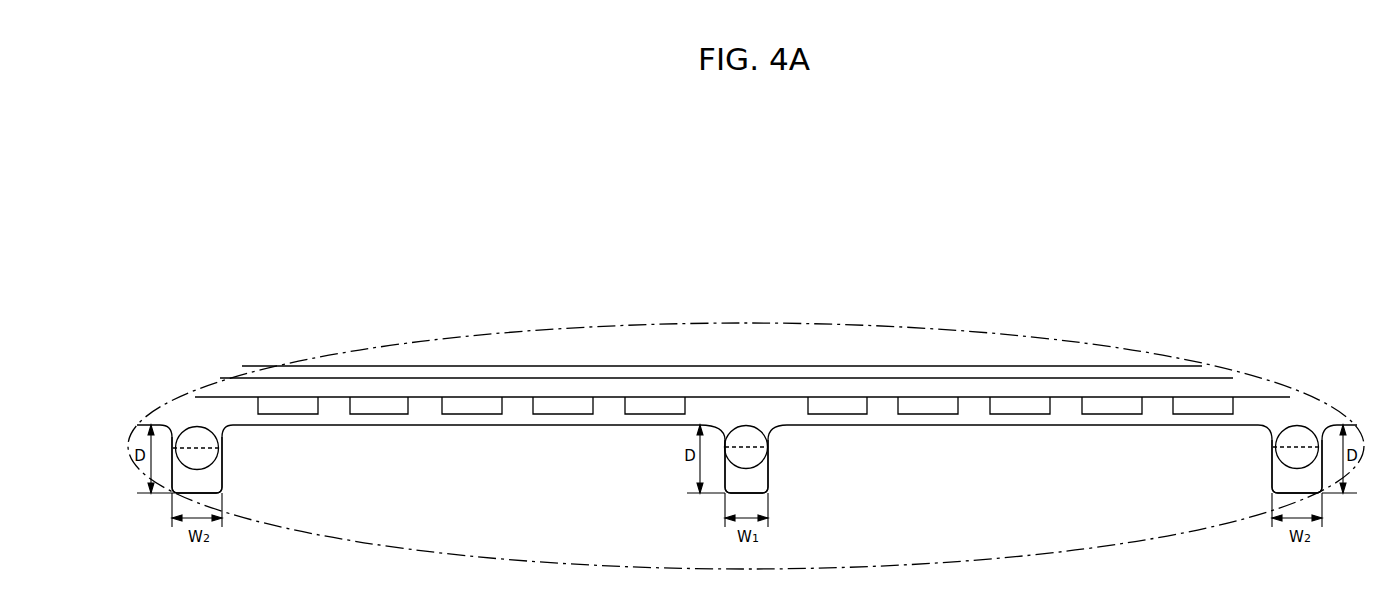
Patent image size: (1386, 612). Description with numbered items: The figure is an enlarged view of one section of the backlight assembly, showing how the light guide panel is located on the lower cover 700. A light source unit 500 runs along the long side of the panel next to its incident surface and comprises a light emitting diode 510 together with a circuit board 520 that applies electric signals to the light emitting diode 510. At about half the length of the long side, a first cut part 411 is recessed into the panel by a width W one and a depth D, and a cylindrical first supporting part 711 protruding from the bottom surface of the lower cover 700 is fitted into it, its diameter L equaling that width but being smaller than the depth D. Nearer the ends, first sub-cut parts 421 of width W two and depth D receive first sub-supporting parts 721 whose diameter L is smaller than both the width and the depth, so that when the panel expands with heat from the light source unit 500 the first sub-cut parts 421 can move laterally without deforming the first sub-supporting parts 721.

The light source unit 500 is at (742, 334).
The light emitting diode 510 is at (375, 403).
The circuit board 520 is at (425, 388).
The lower cover 700 is at (518, 372).
The first supporting part 711 is at (758, 458).
The first sub-supporting part 721 is at (208, 458).
The first cut part 411 is at (750, 492).
The first sub-cut part 421 is at (200, 492).